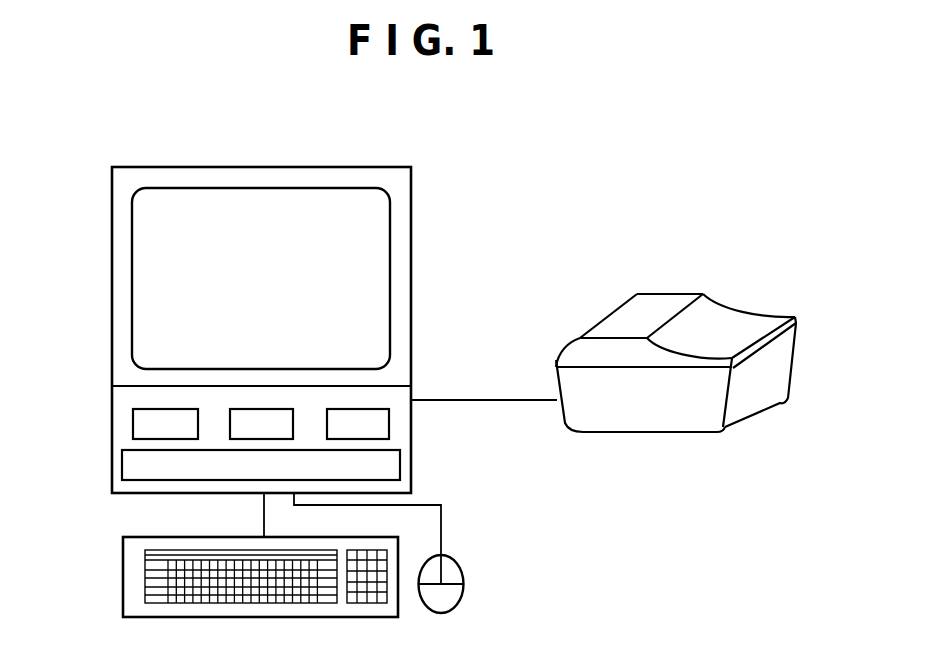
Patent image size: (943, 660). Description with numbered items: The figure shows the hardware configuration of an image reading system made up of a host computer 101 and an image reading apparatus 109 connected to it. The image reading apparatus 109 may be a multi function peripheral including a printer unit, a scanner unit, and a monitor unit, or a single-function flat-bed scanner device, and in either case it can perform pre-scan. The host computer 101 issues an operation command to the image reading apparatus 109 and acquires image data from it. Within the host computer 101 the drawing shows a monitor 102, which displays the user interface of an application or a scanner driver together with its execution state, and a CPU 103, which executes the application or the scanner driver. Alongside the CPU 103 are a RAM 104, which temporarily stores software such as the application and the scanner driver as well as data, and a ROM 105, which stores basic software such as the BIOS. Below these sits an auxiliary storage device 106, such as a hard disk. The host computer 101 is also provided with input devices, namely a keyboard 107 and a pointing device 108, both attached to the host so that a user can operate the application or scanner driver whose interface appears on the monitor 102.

The host computer 101 is at (411, 203).
The monitor 102 is at (391, 272).
The CPU 103 is at (143, 409).
The RAM 104 is at (287, 410).
The ROM 105 is at (389, 421).
The auxiliary storage device 106 is at (400, 462).
The keyboard 107 is at (123, 578).
The pointing device 108 is at (456, 558).
The image reading apparatus 109 is at (720, 303).